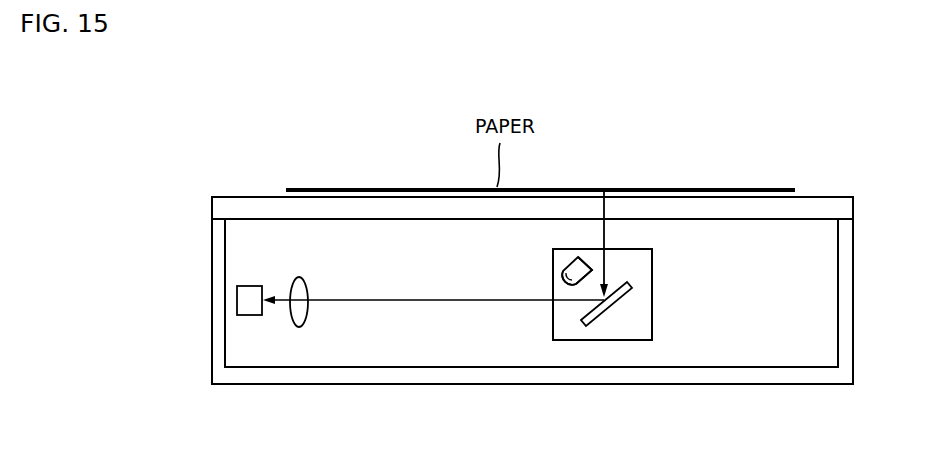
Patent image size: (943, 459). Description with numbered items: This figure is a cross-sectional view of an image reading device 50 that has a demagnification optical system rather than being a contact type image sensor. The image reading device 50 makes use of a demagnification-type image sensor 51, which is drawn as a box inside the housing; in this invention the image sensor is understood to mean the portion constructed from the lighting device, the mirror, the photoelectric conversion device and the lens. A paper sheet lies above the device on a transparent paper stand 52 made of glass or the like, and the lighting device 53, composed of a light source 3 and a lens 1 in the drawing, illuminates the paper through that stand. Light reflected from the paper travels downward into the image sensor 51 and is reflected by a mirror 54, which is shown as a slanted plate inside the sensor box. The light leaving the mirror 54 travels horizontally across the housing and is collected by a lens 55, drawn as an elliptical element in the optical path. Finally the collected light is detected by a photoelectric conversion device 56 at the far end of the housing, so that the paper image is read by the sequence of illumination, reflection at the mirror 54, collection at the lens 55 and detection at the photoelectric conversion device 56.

The image reading device 50 is at (488, 393).
The demagnification-type image sensor 51 is at (674, 292).
The platen glass / top plate 52 is at (811, 203).
The light source unit 53 is at (514, 243).
The light source 3 is at (569, 262).
The lens 1 is at (563, 279).
The mirror 54 is at (592, 318).
The lens 55 is at (298, 291).
The photoelectric conversion device 56 is at (243, 296).